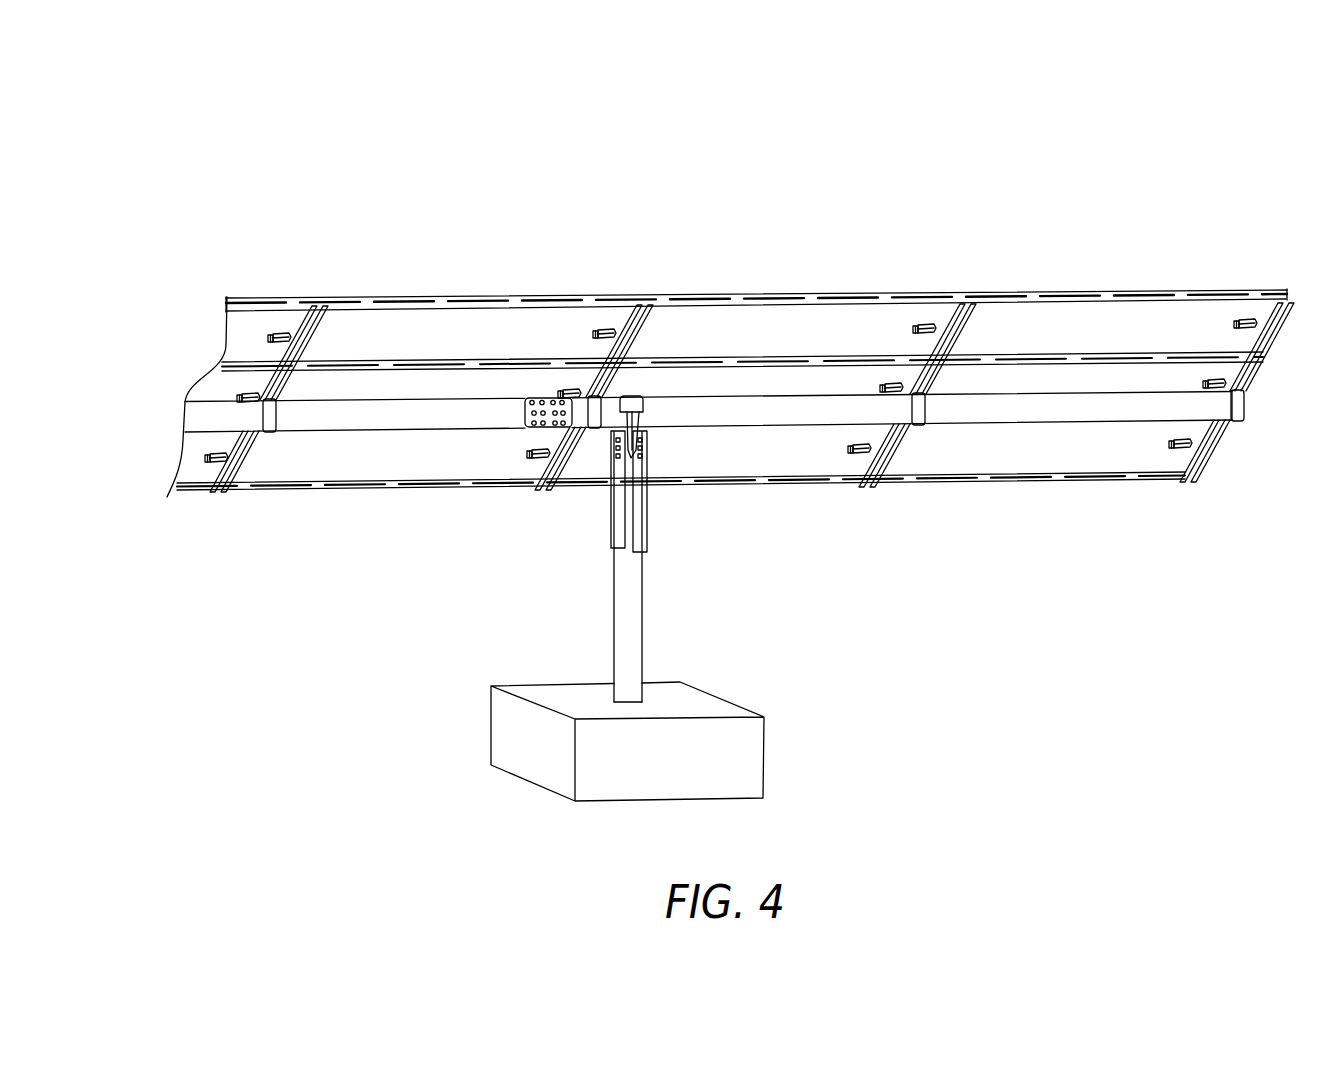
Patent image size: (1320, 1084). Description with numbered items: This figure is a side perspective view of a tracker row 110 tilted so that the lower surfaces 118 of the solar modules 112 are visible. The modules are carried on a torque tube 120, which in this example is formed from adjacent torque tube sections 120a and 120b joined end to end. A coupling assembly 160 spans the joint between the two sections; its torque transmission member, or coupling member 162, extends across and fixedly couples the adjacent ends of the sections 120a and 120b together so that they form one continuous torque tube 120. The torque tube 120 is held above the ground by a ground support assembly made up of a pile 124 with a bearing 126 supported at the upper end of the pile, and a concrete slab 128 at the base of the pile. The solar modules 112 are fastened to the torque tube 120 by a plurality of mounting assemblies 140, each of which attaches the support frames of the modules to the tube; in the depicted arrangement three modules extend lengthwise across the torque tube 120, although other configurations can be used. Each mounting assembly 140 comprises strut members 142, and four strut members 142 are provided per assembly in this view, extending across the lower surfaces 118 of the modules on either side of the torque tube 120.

The tracker row 110 is at (430, 148).
The solar module 112 is at (388, 300).
The lower surface 118 is at (203, 470).
The torque tube 120 is at (1097, 403).
The torque tube section 120a is at (461, 405).
The torque tube section 120b is at (763, 408).
The pile 124 is at (626, 585).
The bearing 126 is at (649, 390).
The concrete slab 128 is at (700, 710).
The mounting assembly 140 is at (280, 445).
The strut member 142 is at (925, 365).
The coupling assembly 160 is at (543, 385).
The coupling member 162 is at (525, 437).